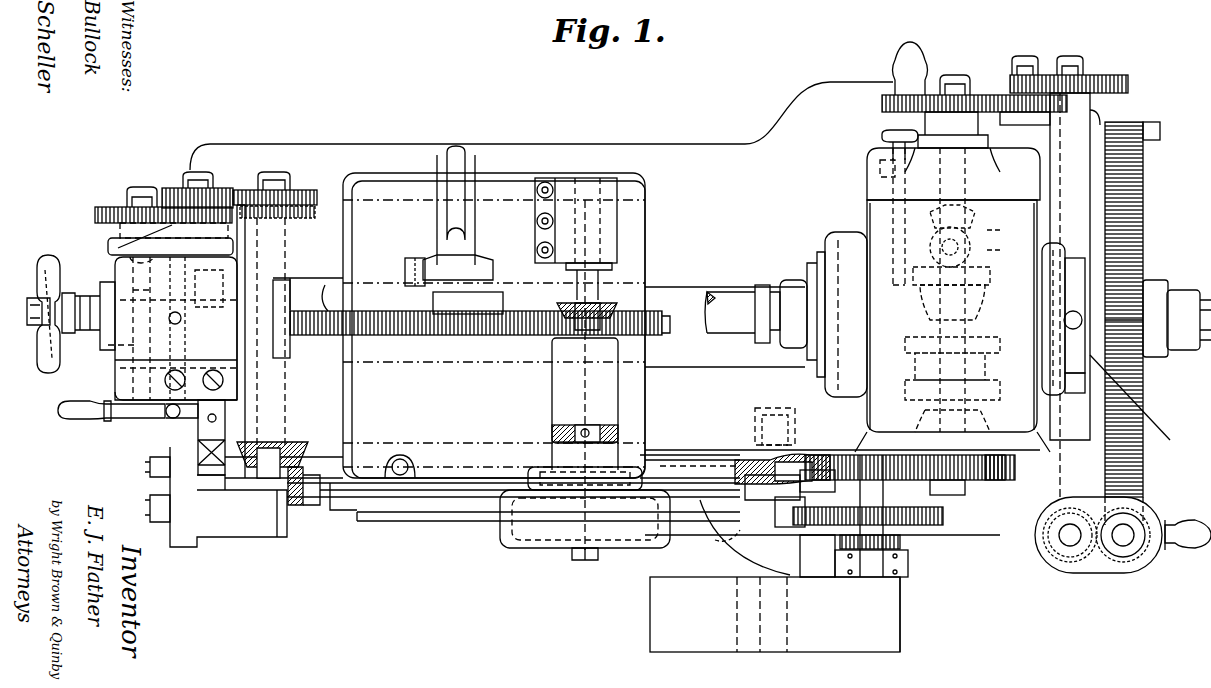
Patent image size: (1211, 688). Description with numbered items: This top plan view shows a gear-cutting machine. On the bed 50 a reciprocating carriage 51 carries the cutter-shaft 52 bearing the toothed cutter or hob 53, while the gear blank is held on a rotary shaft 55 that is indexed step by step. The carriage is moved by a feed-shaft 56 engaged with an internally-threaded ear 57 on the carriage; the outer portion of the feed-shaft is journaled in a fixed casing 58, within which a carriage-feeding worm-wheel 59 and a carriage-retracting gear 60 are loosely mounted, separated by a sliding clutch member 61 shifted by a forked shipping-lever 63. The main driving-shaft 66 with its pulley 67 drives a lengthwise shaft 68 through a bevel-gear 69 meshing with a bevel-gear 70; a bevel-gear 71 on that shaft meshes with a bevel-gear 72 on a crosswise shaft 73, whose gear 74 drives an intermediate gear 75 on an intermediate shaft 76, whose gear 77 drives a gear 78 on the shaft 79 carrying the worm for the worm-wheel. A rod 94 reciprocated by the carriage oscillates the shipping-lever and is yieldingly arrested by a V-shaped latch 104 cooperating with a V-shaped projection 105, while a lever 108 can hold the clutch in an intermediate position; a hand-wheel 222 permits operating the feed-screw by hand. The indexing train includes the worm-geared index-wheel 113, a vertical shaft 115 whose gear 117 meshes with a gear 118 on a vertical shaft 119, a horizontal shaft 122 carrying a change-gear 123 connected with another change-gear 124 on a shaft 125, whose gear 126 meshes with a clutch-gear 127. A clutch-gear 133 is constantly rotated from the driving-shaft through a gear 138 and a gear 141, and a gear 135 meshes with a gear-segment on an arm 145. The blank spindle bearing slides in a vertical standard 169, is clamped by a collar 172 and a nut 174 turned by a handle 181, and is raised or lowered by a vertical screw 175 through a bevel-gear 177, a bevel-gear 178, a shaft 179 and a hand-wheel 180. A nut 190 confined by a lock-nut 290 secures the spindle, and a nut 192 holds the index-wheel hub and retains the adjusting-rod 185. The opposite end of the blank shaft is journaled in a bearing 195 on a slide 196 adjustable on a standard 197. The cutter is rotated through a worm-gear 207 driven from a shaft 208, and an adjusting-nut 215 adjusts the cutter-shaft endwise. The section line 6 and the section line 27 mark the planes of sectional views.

The section line 6 6 is at (585, 130).
The section line 27 27 is at (198, 243).
The bed 50 is at (530, 145).
The reciprocating carriage 51 is at (635, 185).
The cutter-shaft 52 is at (602, 282).
The toothed cutter or hob 53 is at (555, 300).
The rotary shaft 55 is at (730, 330).
The feed-shaft 56 is at (329, 282).
The internally-threaded ear 57 is at (390, 335).
The fixed casing 58 is at (118, 380).
The carriage-feeding worm-wheel 59 is at (108, 280).
The carriage-retracting gear 60 is at (226, 270).
The sliding clutch member 61 is at (157, 328).
The shipping-lever 63 is at (115, 358).
The main driving-shaft 66 is at (770, 652).
The pulley 67 is at (895, 652).
The shaft 68 is at (430, 500).
The bevel-gear 69 is at (740, 458).
The bevel-gear 70 is at (752, 445).
The bevel-gear 71 is at (308, 507).
The bevel-gear 72 is at (300, 450).
The shaft 73 is at (290, 350).
The gear 74 is at (306, 200).
The intermediate gear 75 is at (226, 188).
The intermediate shaft 76 is at (190, 170).
The gear 77 is at (118, 250).
The gear 78 is at (95, 212).
The shaft 79 is at (118, 237).
The rod 94 is at (248, 478).
The V-shaped latch 104 is at (198, 440).
The V-shaped projection 105 is at (170, 468).
The lever 108 is at (122, 420).
The index-wheel 113 is at (1145, 215).
The vertical shaft 115 is at (1123, 560).
The gear 117 is at (1163, 565).
The gear 118 is at (1072, 560).
The vertical shaft 119 is at (1062, 548).
The horizontal shaft 122 is at (1090, 247).
The gear 123 is at (1112, 85).
The gear 124 is at (882, 104).
The horizontal shaft 125 is at (985, 212).
The gear 126 is at (1005, 478).
The clutch-gear 127 is at (925, 480).
The clutch-gear 133 is at (945, 520).
The gear 135 is at (905, 545).
The gear 138 is at (812, 500).
The gear 141 is at (720, 545).
The arm 145 is at (825, 548).
The vertical standard 169 is at (885, 400).
The collar 172 is at (1058, 272).
The nut 174 is at (1082, 380).
The vertical screw 175 is at (930, 245).
The bevel-gear 177 is at (1009, 250).
The bevel-gear 178 is at (1009, 230).
The shaft 179 is at (975, 178).
The hand-wheel 180 is at (927, 95).
The handle 181 is at (1075, 345).
The adjusting-rod 185 is at (1203, 292).
The nut 190 is at (1140, 402).
The nut 192 is at (1175, 345).
The bearing 195 is at (498, 292).
The slide 196 is at (405, 265).
The standard 197 is at (470, 270).
The worm-gear 207 is at (530, 548).
The shaft 208 is at (472, 521).
The adjusting-nut 215 is at (552, 433).
The hand-wheel 222 is at (40, 350).
The lock-nut 290 is at (1160, 310).